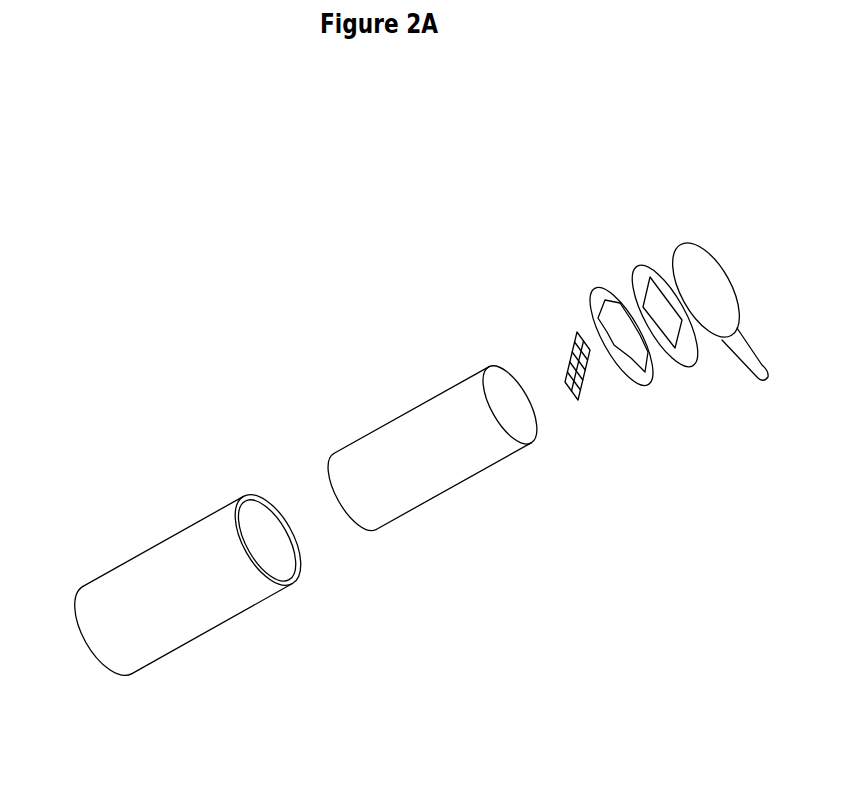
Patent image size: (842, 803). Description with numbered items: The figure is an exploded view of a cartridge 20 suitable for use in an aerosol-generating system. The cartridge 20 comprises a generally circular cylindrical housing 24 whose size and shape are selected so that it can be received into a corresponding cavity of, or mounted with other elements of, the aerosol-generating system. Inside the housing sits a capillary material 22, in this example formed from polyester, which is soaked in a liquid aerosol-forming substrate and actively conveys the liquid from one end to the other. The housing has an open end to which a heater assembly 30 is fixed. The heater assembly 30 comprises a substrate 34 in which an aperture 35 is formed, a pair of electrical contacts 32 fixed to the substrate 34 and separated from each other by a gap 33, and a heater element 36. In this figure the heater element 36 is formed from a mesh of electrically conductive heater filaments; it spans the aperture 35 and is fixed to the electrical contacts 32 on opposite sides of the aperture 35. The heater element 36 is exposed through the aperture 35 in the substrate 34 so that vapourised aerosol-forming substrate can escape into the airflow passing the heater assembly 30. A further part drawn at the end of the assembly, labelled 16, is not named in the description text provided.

The light emitting element 16 is at (713, 298).
The cartridge 20 is at (355, 402).
The capillary material 22 is at (438, 442).
The housing 24 is at (200, 585).
The heater assembly 30 is at (470, 243).
The electrical contacts 32 is at (598, 292).
The gap 33 is at (650, 383).
The substrate 34 is at (698, 364).
The aperture 35 is at (653, 300).
The heater element 36 is at (572, 343).